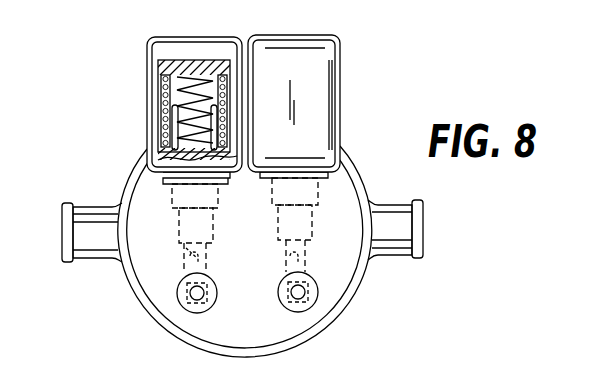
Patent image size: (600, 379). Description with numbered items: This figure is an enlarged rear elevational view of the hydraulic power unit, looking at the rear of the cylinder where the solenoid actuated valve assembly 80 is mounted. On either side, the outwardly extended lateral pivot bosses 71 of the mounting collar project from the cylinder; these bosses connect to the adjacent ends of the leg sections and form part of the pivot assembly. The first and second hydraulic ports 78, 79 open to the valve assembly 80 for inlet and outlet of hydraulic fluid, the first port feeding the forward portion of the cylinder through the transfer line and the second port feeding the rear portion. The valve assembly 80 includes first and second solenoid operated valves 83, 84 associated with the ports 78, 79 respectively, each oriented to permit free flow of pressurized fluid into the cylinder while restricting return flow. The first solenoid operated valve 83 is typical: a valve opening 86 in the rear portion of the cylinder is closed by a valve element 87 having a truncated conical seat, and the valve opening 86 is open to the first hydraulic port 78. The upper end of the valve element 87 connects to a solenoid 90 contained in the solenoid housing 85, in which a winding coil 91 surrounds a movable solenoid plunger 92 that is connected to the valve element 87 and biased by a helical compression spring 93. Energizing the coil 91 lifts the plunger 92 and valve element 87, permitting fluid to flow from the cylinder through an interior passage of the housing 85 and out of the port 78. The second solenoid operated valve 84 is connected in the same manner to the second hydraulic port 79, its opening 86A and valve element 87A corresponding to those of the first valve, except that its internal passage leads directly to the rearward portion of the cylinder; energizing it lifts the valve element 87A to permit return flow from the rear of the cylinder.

The solenoid actuated valve assembly 80 is at (368, 61).
The lateral pivot bosses 71 is at (93, 212).
The first hydraulic port 78 is at (179, 299).
The second hydraulic port 79 is at (318, 292).
The first solenoid operated valve 83 is at (140, 51).
The second solenoid operated valve 84 is at (343, 34).
The solenoid housing 85 is at (174, 36).
The valve opening 86 is at (187, 266).
The terminal 86A is at (279, 254).
The valve element 87 is at (187, 244).
The valve element 87A is at (323, 202).
The solenoid 90 is at (150, 84).
The winding coil 91 is at (167, 110).
The solenoid plunger 92 is at (167, 129).
The helical compression spring 93 is at (193, 82).